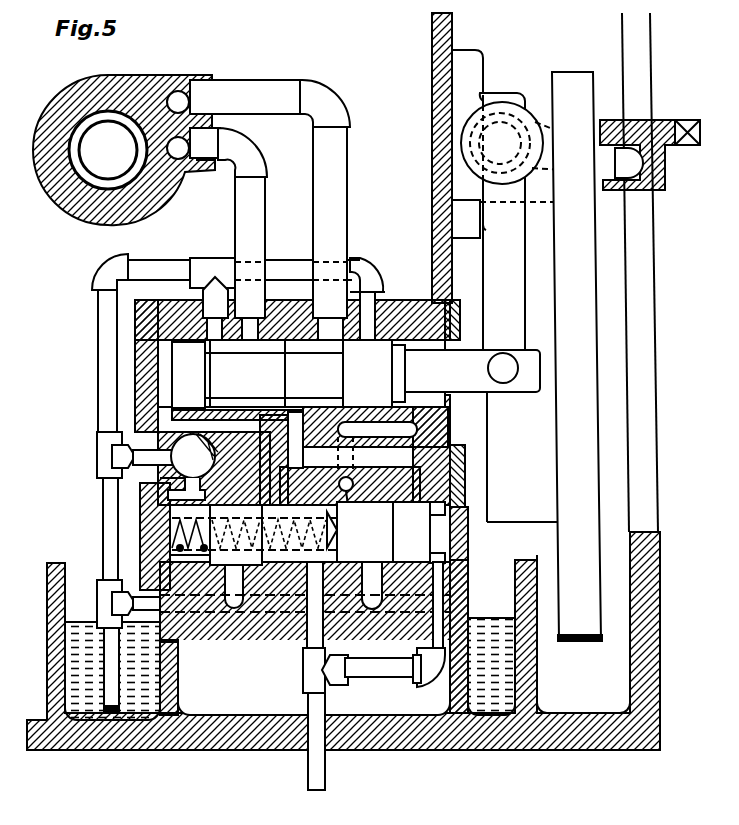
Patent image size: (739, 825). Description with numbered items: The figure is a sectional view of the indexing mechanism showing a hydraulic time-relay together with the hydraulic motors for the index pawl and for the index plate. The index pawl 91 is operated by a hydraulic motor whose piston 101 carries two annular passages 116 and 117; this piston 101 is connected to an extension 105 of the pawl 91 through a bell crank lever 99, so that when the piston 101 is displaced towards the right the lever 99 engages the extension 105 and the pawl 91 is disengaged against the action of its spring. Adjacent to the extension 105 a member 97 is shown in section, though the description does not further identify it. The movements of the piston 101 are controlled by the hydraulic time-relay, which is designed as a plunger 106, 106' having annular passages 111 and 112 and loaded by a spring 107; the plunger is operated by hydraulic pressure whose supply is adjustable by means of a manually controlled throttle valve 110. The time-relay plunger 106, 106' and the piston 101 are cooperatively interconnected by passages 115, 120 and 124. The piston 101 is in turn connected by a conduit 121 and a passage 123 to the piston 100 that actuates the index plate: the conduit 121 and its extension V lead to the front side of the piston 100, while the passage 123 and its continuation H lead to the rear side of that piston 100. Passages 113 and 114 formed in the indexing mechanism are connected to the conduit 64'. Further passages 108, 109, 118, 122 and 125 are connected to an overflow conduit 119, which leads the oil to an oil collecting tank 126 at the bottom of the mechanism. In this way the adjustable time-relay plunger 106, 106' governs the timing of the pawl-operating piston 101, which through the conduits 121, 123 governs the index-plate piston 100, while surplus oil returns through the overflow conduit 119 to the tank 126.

The piston 100 is at (128, 165).
The conduit 121 is at (258, 225).
The passage 123 is at (338, 225).
The passage 125 is at (384, 288).
The extension 105 is at (616, 122).
The cross member 97 is at (689, 147).
The index pawl 91 is at (667, 192).
The bell crank lever 99 is at (527, 221).
The piston 101 is at (472, 371).
The annular passage 116 is at (252, 402).
The annular passage 117 is at (330, 400).
The passage 122 is at (193, 344).
The overflow conduit 119 is at (98, 352).
The passage 115 is at (165, 423).
The throttle valve 110 is at (172, 470).
The passage 108 is at (178, 500).
The spring 107 is at (170, 555).
The plunger 106 is at (253, 534).
The passage 120 is at (348, 432).
The passage 124 is at (309, 440).
The annular passage 112 is at (422, 508).
The annular passage 111 is at (312, 562).
The plunger 106' is at (472, 579).
The passage 109 is at (232, 610).
The passage 114 is at (305, 652).
The passage 118 is at (382, 672).
The passage 113 is at (440, 640).
The conduit 64' is at (332, 742).
The oil collecting tank 126 is at (136, 688).